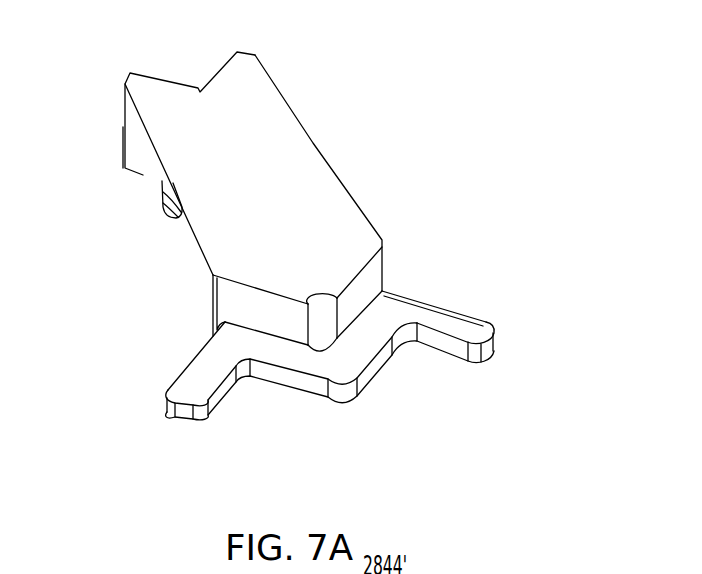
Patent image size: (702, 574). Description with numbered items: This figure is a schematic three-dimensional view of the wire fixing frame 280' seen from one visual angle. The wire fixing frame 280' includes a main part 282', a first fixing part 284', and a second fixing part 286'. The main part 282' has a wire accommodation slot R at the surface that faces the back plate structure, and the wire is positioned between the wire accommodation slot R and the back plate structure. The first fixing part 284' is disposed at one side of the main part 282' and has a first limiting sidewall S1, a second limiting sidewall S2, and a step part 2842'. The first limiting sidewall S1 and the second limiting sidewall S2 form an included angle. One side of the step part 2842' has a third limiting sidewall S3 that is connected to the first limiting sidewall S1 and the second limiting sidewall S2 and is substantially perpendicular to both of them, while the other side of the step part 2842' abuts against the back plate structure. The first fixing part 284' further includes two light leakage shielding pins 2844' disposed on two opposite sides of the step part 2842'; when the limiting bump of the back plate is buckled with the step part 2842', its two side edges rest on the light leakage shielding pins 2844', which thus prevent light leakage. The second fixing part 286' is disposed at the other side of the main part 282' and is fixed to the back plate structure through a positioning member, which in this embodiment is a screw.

The wire fixing frame 280' is at (352, 390).
The main part 282' is at (278, 173).
The first fixing part 284' is at (326, 261).
The second fixing part 286' is at (158, 99).
The step part 2842' is at (327, 373).
The light leakage shielding pins 2844' is at (360, 393).
The first limiting sidewall S1 is at (235, 303).
The second limiting sidewall S2 is at (373, 270).
The third limiting sidewall S3 is at (358, 350).
The wire accommodation slot R is at (188, 255).